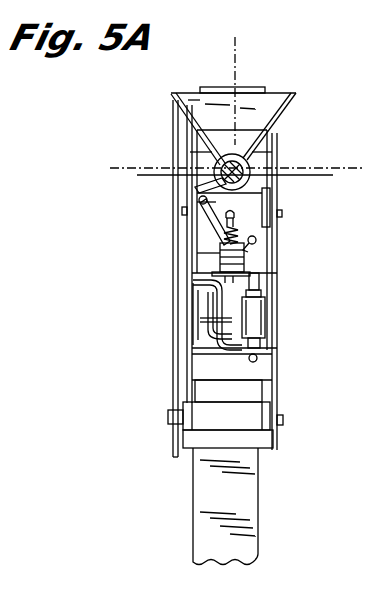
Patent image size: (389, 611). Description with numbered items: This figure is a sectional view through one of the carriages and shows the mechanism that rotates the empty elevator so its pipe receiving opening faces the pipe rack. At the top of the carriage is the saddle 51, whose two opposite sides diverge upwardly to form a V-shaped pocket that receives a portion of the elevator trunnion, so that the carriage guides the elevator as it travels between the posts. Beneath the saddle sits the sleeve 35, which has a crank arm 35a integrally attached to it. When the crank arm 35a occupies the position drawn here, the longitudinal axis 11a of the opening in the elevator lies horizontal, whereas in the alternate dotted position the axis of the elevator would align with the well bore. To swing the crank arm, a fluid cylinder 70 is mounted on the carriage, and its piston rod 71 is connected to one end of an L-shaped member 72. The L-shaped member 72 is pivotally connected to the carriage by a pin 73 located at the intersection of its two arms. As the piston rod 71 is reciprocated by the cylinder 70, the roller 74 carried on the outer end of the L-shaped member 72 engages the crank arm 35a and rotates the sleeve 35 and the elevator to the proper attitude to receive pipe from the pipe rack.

The longitudinal axis 11a is at (236, 48).
The saddle 51 is at (297, 100).
The sleeve 35 is at (248, 152).
The crank arm 35a is at (196, 188).
The roller 74 is at (200, 202).
The L-shaped member 72 is at (227, 232).
The pin 73 is at (222, 255).
The piston rod 71 is at (260, 280).
The fluid cylinder 70 is at (263, 318).